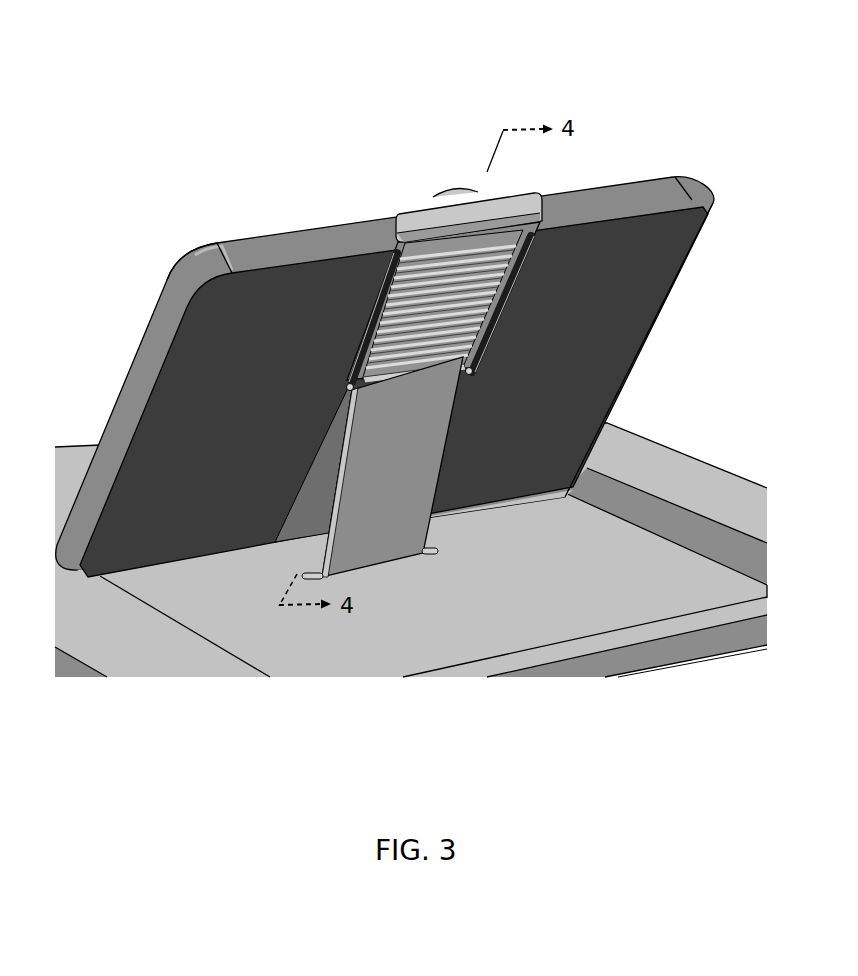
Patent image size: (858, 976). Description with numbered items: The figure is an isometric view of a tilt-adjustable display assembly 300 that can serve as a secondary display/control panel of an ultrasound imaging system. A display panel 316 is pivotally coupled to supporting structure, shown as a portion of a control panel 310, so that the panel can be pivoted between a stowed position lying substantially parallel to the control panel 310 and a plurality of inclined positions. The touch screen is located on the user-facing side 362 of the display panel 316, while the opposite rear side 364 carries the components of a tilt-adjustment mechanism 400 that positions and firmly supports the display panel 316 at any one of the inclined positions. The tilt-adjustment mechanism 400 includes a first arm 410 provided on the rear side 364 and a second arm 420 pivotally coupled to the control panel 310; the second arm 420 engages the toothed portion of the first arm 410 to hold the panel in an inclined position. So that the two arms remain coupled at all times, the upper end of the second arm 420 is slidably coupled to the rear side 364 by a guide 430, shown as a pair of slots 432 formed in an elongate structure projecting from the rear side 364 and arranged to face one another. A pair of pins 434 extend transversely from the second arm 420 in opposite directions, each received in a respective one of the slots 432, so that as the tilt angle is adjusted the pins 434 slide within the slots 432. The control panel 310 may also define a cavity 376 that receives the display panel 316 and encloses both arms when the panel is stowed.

The tilt-adjustable display assembly 300 is at (836, 48).
The control panel 310 is at (728, 490).
The display panel 316 is at (695, 184).
The user-facing side 362 is at (212, 225).
The rear side 364 is at (690, 265).
The cavity 376 is at (657, 552).
The tilt-adjustment mechanism 400 is at (470, 445).
The first arm 410 is at (417, 222).
The second arm 420 is at (418, 527).
The guide 430 is at (358, 350).
The slots 432 is at (373, 308).
The pins 434 is at (350, 389).